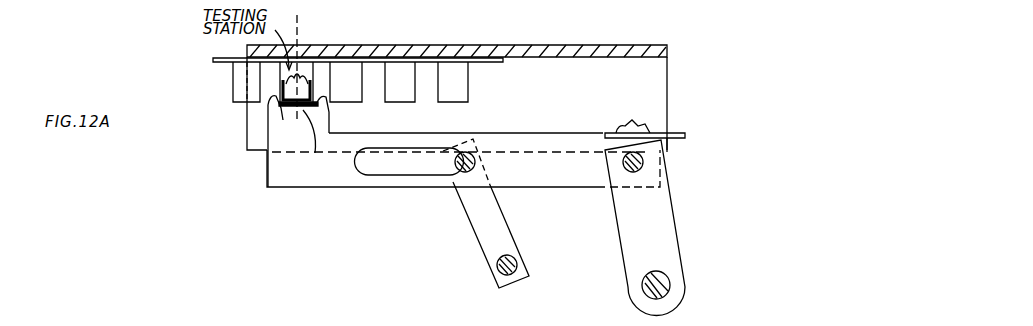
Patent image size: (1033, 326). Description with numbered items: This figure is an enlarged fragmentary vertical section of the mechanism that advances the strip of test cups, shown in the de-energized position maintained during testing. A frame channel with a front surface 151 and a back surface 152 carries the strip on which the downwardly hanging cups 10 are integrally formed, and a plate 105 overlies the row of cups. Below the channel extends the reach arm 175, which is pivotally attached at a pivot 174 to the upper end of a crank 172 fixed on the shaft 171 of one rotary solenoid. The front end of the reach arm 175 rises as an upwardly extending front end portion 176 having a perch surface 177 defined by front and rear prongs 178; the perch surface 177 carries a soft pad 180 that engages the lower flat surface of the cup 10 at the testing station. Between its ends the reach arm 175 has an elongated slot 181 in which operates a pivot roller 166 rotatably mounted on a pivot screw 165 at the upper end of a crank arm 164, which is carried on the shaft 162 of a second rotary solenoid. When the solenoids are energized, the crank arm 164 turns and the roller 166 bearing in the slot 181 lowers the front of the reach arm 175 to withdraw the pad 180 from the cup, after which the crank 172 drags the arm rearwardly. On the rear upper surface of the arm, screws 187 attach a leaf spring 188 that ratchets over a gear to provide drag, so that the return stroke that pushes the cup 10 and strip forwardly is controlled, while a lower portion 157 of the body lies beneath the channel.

The cup 10 is at (408, 102).
The plate 105 is at (482, 63).
The front surface 151 is at (247, 137).
The back surface 152 is at (668, 100).
The body portion 157 is at (262, 157).
The shaft 162 is at (497, 268).
The crank arm 164 is at (497, 223).
The pivot screw 165 is at (455, 180).
The pivot roller 166 is at (450, 152).
The shaft 171 is at (648, 297).
The crank 172 is at (630, 254).
The pivot 174 is at (630, 170).
The reach arm 175 is at (328, 189).
The front end portion 176 is at (319, 98).
The perch surface 177 is at (314, 171).
The prongs 178 is at (272, 115).
The soft pad 180 is at (312, 105).
The elongated slot 181 is at (410, 172).
The screws 187 is at (629, 125).
The leaf spring 188 is at (669, 143).